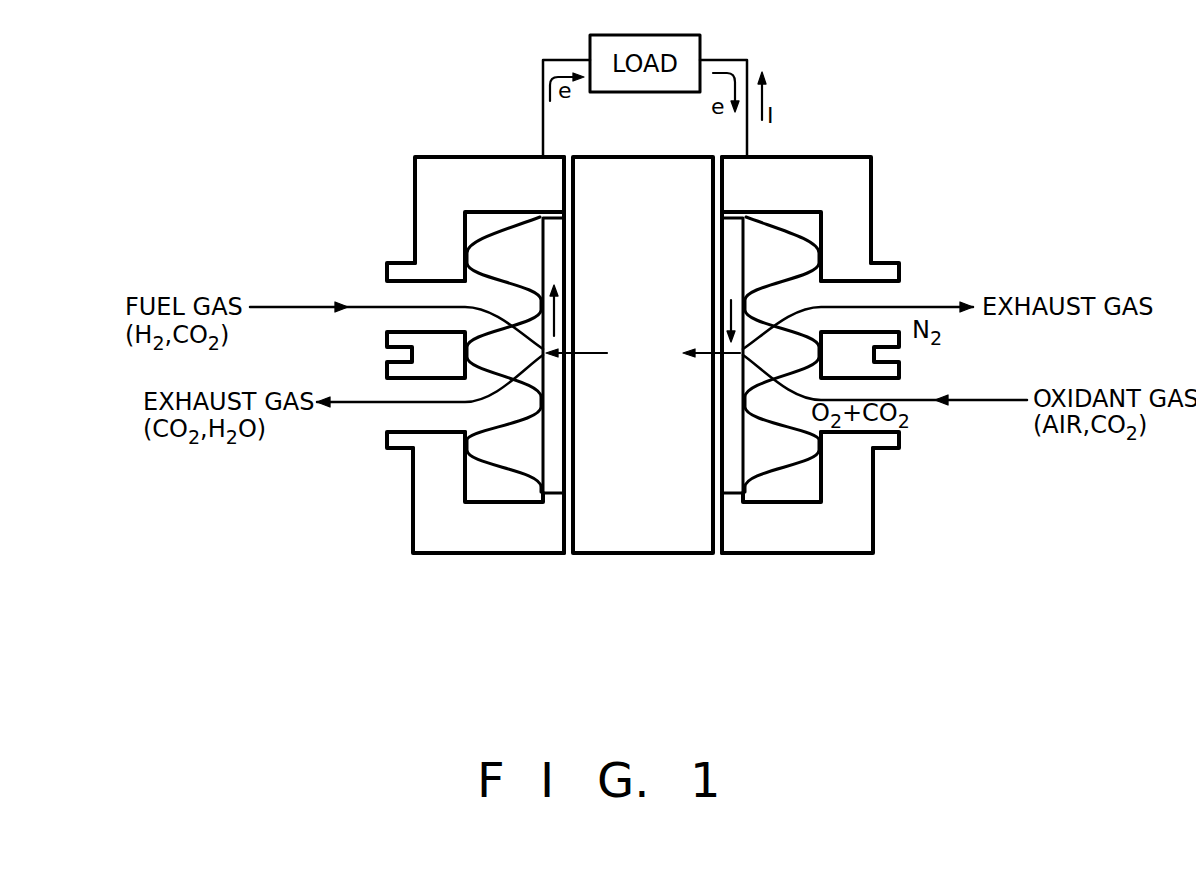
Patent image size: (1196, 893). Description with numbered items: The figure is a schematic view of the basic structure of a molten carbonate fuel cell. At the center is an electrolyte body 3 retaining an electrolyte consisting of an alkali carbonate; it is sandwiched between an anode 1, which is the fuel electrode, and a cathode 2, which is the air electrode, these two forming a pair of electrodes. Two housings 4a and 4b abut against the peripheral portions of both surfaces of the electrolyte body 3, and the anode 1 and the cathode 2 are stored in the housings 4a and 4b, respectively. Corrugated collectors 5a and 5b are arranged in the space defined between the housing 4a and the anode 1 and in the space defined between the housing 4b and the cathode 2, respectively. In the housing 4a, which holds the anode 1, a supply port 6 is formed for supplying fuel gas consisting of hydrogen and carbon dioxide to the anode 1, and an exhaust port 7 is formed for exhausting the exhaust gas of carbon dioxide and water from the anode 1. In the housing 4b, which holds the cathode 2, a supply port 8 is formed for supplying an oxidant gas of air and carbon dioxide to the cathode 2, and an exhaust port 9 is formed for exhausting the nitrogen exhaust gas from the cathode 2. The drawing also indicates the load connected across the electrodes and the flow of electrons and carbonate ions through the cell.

The anode 1 is at (553, 486).
The cathode 2 is at (733, 486).
The electrolyte body 3 is at (655, 540).
The housing 4a is at (450, 542).
The housing 4b is at (833, 542).
The corrugated collector 5a is at (480, 473).
The corrugated collector 5b is at (800, 473).
The supply port 6 is at (410, 296).
The exhaust port 7 is at (403, 412).
The supply port 8 is at (910, 425).
The exhaust port 9 is at (883, 291).